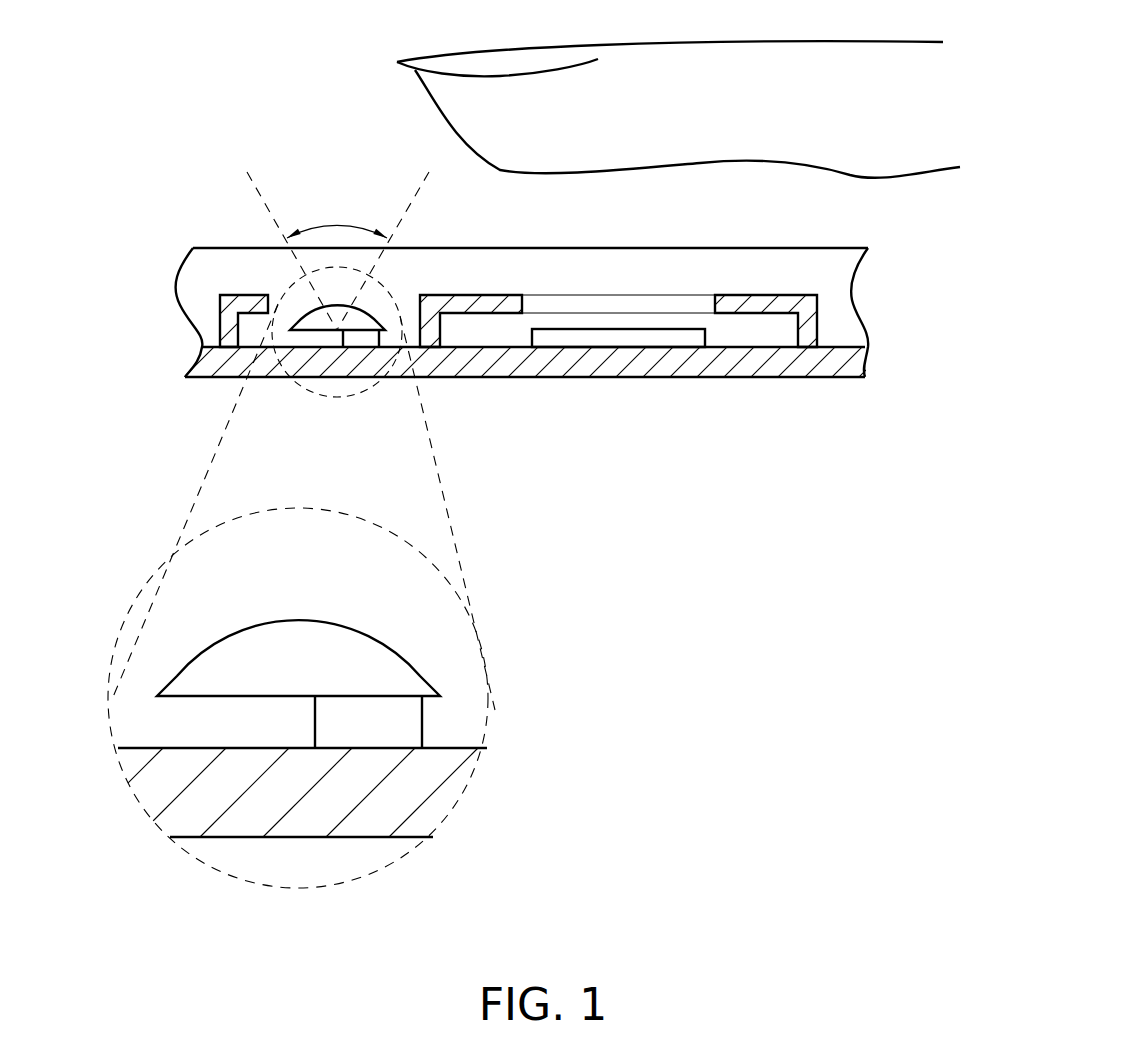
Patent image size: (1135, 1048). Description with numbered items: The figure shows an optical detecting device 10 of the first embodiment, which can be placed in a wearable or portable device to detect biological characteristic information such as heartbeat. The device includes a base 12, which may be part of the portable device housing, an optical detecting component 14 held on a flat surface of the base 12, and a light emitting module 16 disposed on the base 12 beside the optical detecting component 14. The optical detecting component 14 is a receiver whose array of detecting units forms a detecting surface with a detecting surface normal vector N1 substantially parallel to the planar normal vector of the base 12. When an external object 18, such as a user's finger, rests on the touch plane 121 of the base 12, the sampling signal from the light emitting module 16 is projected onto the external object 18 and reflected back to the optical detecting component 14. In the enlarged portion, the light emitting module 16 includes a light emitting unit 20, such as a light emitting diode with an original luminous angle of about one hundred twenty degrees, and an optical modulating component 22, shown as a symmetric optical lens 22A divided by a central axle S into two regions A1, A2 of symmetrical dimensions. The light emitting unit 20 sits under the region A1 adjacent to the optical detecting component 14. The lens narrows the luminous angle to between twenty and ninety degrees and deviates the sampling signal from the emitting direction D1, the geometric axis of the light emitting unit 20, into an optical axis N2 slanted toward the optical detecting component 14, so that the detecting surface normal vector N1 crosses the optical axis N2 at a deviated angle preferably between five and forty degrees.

The optical detecting device 10 is at (205, 208).
The base 12 is at (767, 360).
The touch plane 121 is at (583, 290).
The optical detecting component 14 is at (675, 337).
The light emitting module 16 is at (382, 306).
The external object 18 is at (848, 56).
The light emitting unit 20 is at (420, 725).
The optical modulating component 22 is at (297, 602).
The optical modulating component 22A is at (240, 648).
The detecting surface normal vector N1 is at (622, 325).
The optical axis N2 is at (370, 637).
The emitting direction D1 is at (365, 646).
The central axle S is at (298, 780).
The region A1 is at (433, 677).
The region A2 is at (168, 677).